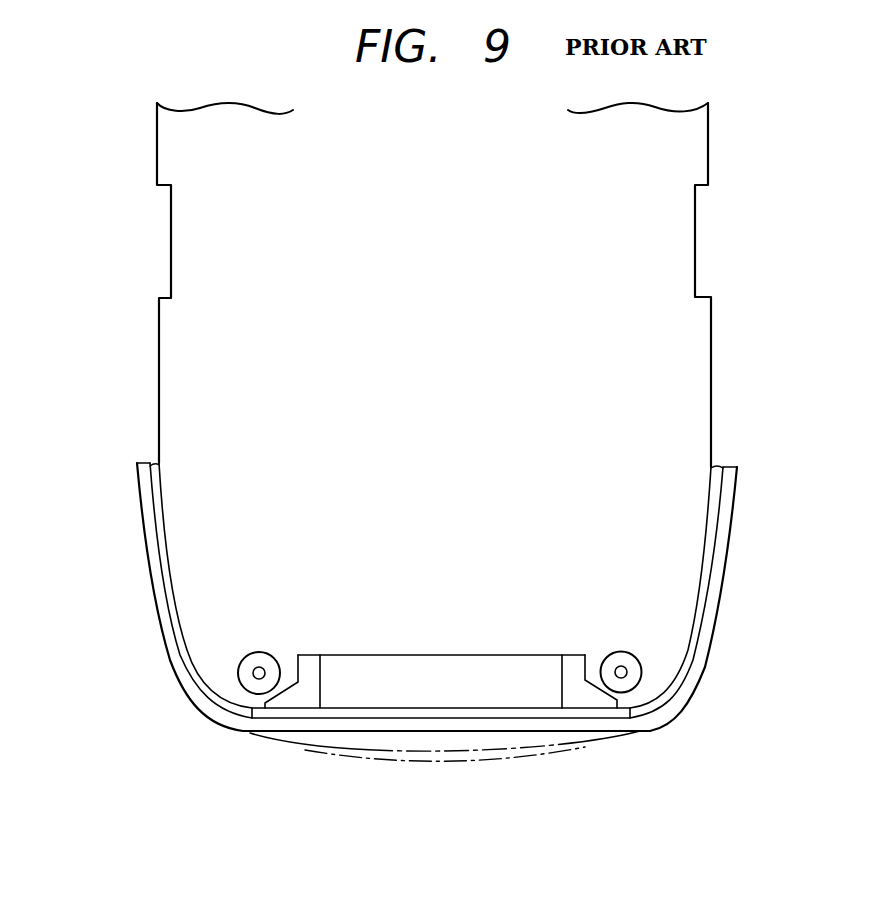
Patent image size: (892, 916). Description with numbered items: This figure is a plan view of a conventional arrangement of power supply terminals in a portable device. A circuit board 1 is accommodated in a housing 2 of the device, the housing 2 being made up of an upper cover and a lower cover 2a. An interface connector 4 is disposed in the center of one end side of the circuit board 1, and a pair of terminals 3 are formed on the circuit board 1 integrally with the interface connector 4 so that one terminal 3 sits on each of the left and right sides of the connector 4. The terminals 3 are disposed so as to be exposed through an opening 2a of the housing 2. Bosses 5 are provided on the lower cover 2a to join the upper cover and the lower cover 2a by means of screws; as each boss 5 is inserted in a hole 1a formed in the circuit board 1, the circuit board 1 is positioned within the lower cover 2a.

The circuit board 1 is at (662, 394).
The hole 1a is at (258, 657).
The housing 2 is at (150, 547).
The lower cover 2a is at (440, 712).
The terminals 3 is at (303, 698).
The interface connector 4 is at (442, 677).
The boss 5 is at (258, 673).